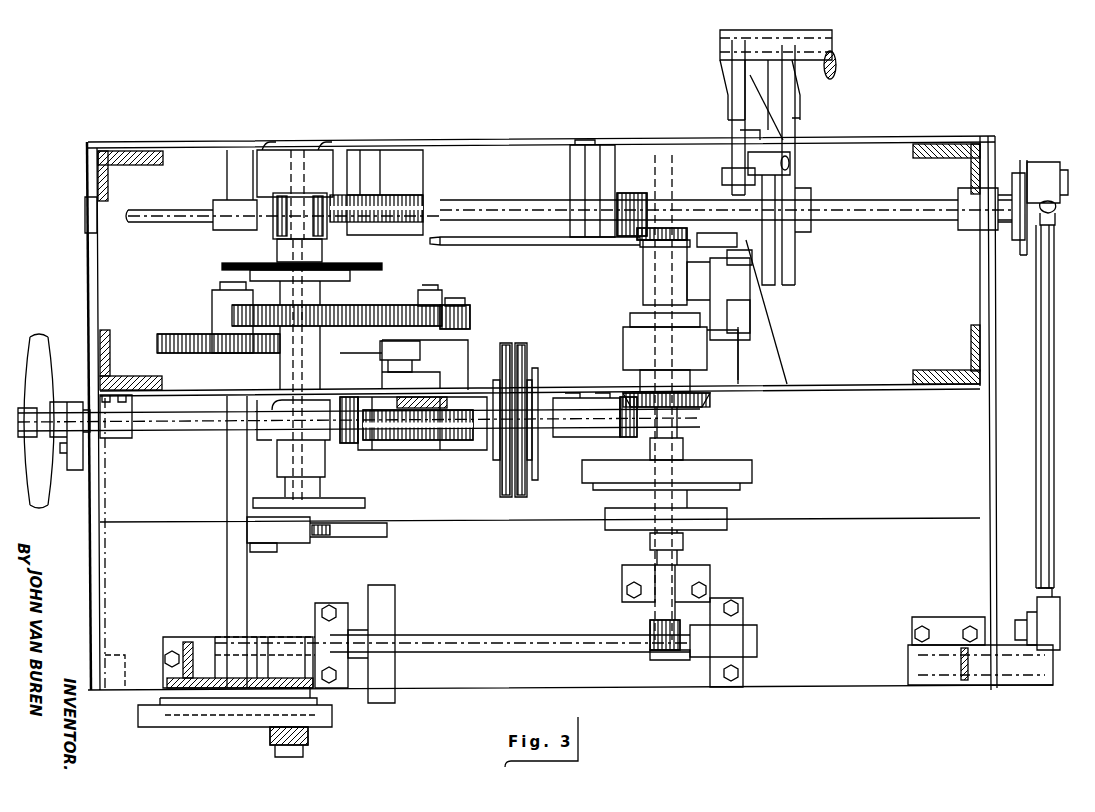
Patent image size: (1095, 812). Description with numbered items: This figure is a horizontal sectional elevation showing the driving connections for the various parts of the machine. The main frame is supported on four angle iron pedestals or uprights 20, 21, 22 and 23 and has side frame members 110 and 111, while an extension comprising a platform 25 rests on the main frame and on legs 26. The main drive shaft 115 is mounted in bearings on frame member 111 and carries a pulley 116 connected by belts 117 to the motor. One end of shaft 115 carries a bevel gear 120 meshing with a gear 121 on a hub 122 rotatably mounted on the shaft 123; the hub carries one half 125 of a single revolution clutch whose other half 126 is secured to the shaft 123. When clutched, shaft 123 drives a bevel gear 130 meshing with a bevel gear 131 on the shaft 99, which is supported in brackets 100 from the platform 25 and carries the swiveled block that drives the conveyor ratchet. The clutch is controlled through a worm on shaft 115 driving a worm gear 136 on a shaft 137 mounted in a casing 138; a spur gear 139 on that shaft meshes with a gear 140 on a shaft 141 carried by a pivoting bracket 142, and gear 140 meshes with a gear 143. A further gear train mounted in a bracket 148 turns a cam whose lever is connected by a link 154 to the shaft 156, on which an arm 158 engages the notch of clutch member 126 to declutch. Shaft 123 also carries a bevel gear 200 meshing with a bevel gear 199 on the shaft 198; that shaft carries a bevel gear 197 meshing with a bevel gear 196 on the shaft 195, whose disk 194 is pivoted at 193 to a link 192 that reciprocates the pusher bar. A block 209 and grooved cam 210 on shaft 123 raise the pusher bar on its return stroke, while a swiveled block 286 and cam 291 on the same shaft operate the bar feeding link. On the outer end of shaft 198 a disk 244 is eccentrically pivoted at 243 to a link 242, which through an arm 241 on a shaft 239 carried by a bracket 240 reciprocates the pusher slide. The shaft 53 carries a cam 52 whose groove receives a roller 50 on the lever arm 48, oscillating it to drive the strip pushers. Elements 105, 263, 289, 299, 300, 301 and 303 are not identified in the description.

The angle iron pedestal 20 is at (150, 166).
The angle iron pedestal 21 is at (146, 366).
The angle iron pedestal 22 is at (928, 162).
The angle iron pedestal 23 is at (920, 368).
The platform 25 is at (100, 602).
The legs 26 is at (110, 680).
The lever arm 48 is at (310, 744).
The cam follower or roller 50 is at (276, 732).
The cam 52 is at (164, 732).
The shaft 53 is at (240, 732).
The shaft 99 is at (546, 634).
The brackets 100 is at (344, 607).
The disc 105 is at (392, 590).
The side frame member 110 is at (590, 140).
The side frame member 111 is at (585, 395).
The main drive shaft 115 is at (543, 386).
The pulley 116 is at (502, 495).
The belts 117 is at (512, 346).
The bevel gear 120 is at (630, 437).
The gear 121 is at (702, 400).
The hub 122 is at (624, 387).
The shaft 123 is at (682, 425).
The clutch half 125 is at (622, 346).
The clutch half 126 is at (628, 316).
The bevel gear 130 is at (646, 630).
The bevel gear 131 is at (678, 658).
The worm gear 136 is at (449, 448).
The shaft 137 is at (437, 365).
The casing 138 is at (398, 448).
The spur gear 139 is at (454, 308).
The gear 140 is at (444, 299).
The shaft 141 is at (453, 300).
The bracket 142 is at (378, 342).
The gear 143 is at (364, 310).
The bracket 148 is at (436, 176).
The link 154 is at (542, 244).
The shaft 156 is at (758, 306).
The arm 158 is at (758, 330).
The link 192 is at (364, 538).
The pivot 193 is at (268, 548).
The disk 194 is at (366, 510).
The shaft 195 is at (336, 494).
The bevel gear 196 is at (272, 240).
The bevel gear 197 is at (322, 194).
The shaft 198 is at (488, 206).
The bevel gear 199 is at (635, 196).
The bevel gear 200 is at (662, 232).
The block 209 is at (690, 544).
The cam 210 is at (724, 520).
The shaft 239 is at (1044, 688).
The bracket 240 is at (932, 618).
The arm 241 is at (1050, 626).
The link 242 is at (1046, 420).
The eccentric pivot 243 is at (1068, 168).
The disk 244 is at (1018, 250).
The plate 263 is at (362, 265).
The block 286 is at (688, 457).
The bracket 289 is at (834, 42).
The cam 291 is at (750, 466).
The pin 299 is at (842, 60).
The support 300 is at (726, 134).
The arm 301 is at (778, 196).
The arm 303 is at (792, 266).